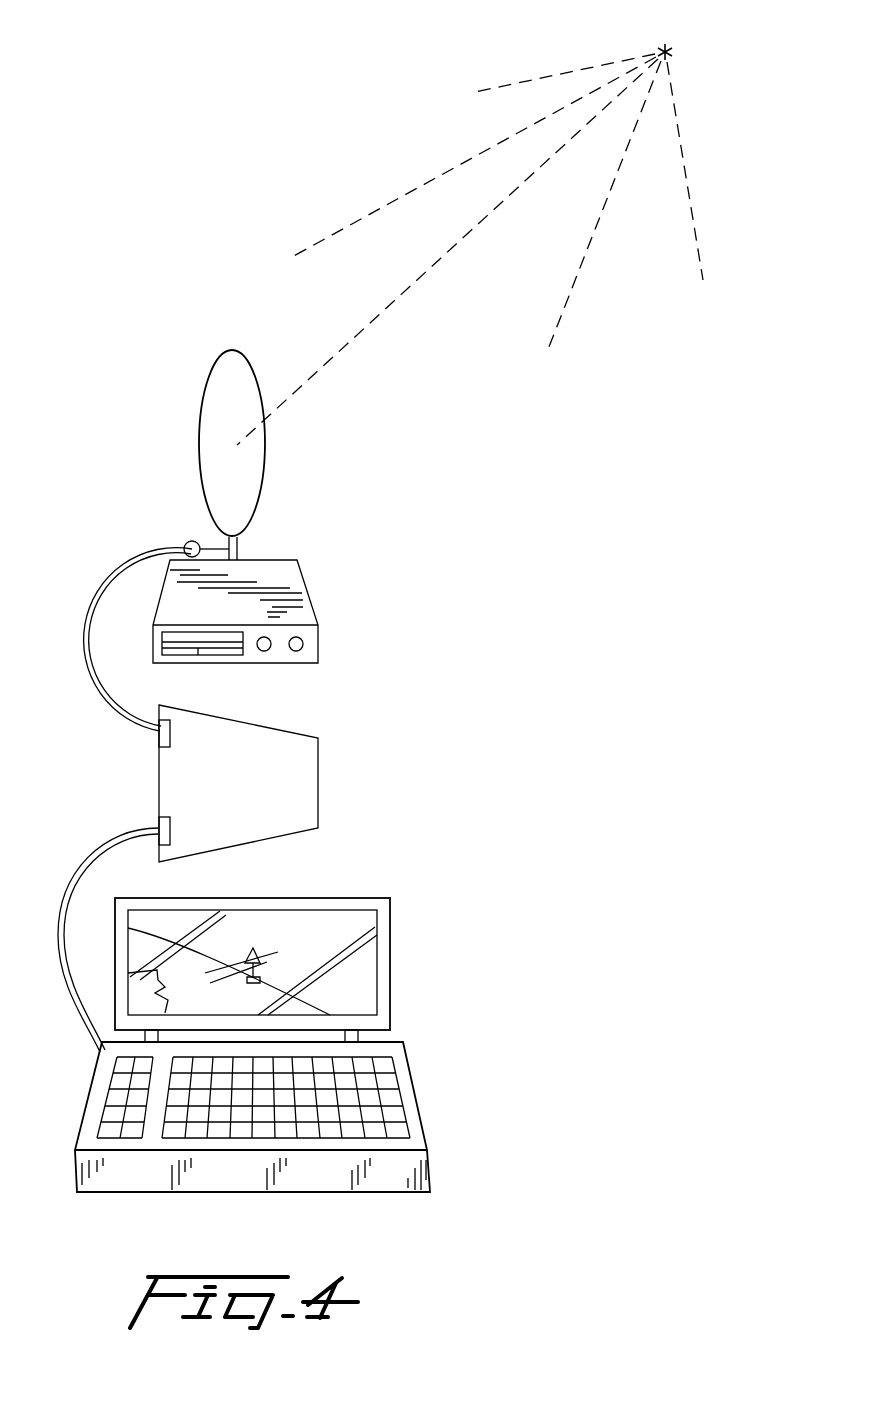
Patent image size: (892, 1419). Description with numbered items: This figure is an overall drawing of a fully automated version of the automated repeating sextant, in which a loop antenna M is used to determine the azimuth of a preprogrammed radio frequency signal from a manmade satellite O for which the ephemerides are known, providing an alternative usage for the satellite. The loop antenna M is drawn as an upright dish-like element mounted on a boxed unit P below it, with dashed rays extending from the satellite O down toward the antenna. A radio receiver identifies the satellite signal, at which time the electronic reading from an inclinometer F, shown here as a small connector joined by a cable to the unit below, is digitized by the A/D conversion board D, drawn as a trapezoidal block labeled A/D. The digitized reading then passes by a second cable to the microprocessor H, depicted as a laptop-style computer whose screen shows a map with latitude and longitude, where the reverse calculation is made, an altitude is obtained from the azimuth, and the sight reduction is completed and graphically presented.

The manmade satellite O is at (672, 52).
The loop antenna M is at (265, 466).
The inclinometer F is at (186, 543).
The processor unit P is at (318, 625).
The A/D conversion board D is at (318, 781).
The microprocessor H is at (390, 972).